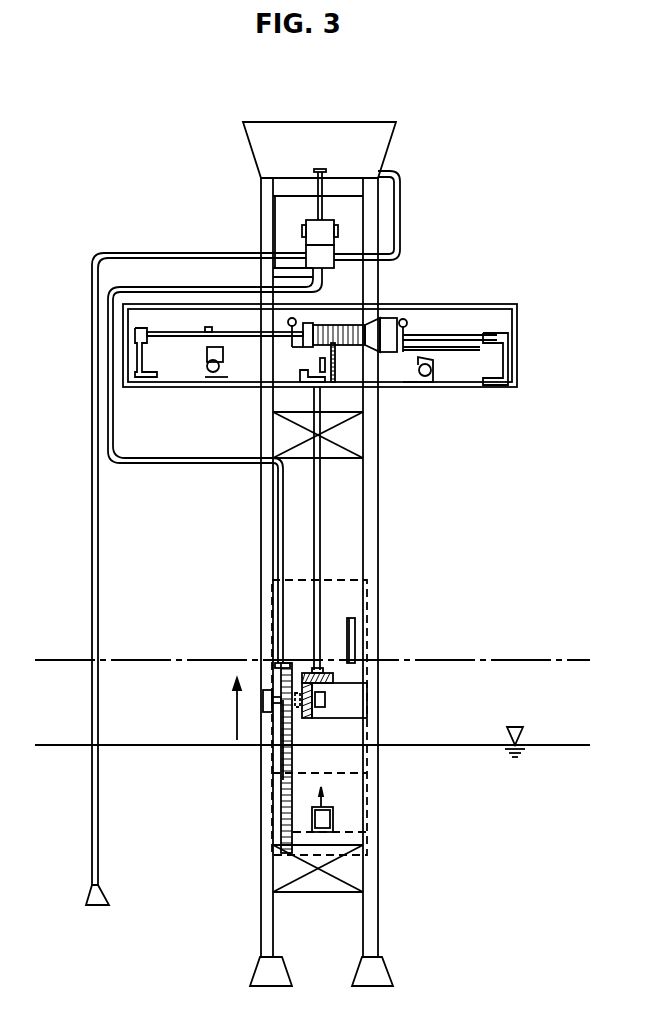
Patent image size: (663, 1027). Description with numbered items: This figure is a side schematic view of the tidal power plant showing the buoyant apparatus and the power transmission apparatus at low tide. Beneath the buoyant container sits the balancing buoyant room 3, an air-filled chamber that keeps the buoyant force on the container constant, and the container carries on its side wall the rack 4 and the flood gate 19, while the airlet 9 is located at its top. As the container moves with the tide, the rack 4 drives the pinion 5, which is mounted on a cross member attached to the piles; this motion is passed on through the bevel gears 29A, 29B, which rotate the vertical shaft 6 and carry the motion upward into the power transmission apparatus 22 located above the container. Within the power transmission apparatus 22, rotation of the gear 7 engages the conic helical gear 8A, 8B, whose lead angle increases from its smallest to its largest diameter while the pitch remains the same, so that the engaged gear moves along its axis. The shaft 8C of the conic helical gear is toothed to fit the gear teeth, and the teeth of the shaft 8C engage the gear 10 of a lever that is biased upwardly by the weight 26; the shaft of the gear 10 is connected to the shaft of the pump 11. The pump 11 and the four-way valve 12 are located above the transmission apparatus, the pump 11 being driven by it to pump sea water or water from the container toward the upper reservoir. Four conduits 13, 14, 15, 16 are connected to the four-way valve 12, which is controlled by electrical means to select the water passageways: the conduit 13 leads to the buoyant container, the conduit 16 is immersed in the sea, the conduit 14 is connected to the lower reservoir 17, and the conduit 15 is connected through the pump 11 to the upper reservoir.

The balancing buoyant room 3 is at (345, 838).
The rack 4 is at (285, 790).
The pinion 5 is at (264, 672).
The vertical shaft 6 is at (321, 492).
The gear 7 is at (380, 388).
The conic helical gear 8A is at (397, 322).
The conic helical gear 8B is at (280, 363).
The shaft of the conic helical gear 8C is at (232, 332).
The airlet 9 is at (354, 620).
The gear 10 is at (203, 342).
The pump 11 is at (318, 233).
The four-way valve 12 is at (318, 262).
The conduit 13 is at (190, 464).
The conduit 14 is at (398, 200).
The conduit 15 is at (324, 172).
The conduit 16 is at (93, 547).
The lower reservoir 17 is at (375, 137).
The flood gate 19 is at (331, 816).
The power transmission apparatus 22 is at (528, 352).
The weight 26 is at (212, 378).
The bevel gear 29A is at (297, 737).
The bevel gear 29B is at (336, 680).